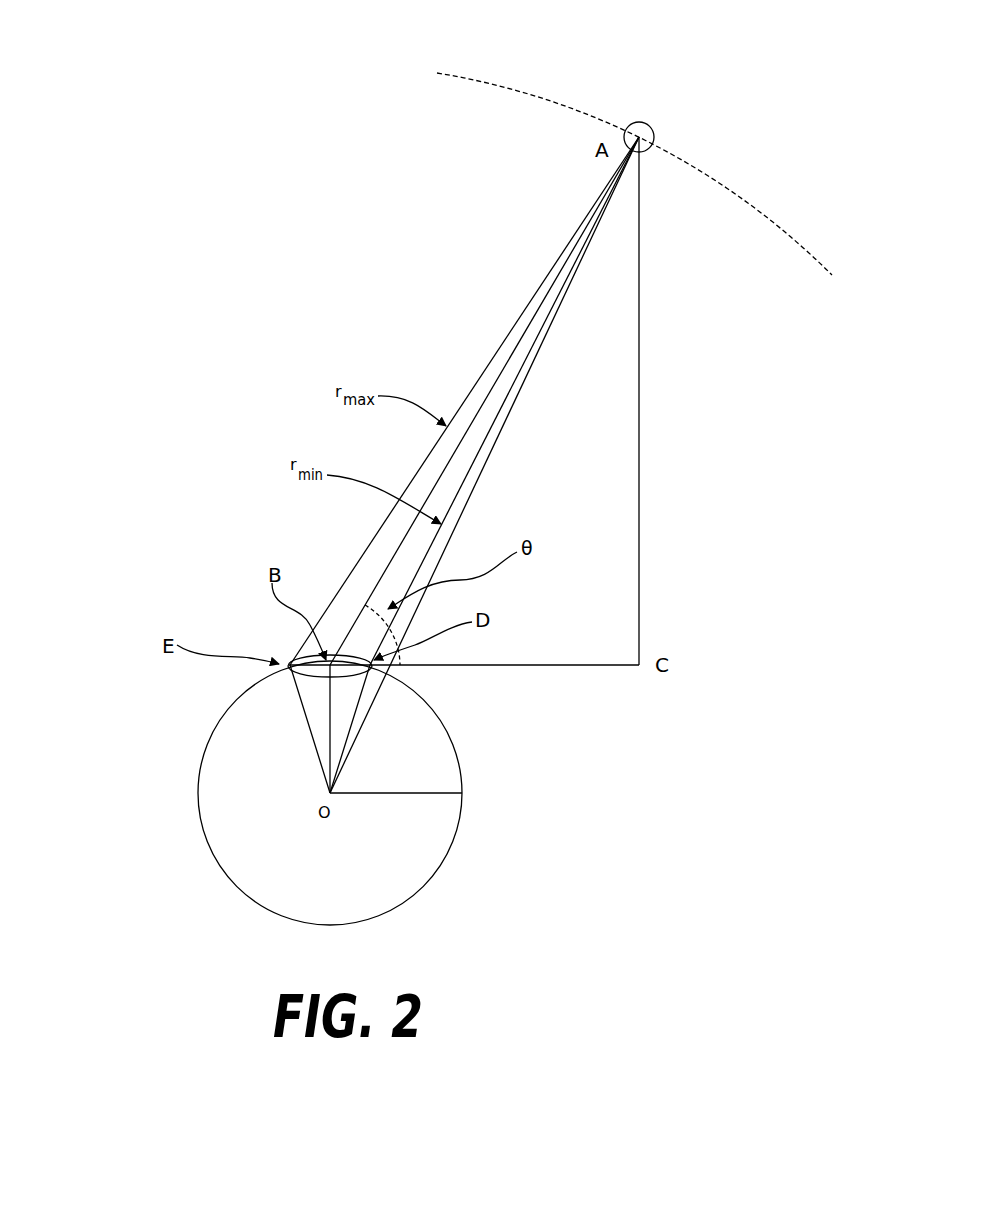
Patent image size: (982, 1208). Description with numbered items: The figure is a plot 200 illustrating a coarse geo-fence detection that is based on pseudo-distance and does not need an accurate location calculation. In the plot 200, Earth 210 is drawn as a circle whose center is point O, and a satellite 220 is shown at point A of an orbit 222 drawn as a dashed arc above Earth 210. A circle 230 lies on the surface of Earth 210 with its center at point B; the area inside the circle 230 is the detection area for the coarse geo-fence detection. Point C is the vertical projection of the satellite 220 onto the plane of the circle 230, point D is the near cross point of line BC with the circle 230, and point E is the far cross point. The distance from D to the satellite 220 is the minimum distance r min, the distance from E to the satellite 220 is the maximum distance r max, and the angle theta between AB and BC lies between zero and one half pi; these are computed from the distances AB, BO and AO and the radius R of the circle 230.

The plot 200 is at (809, 92).
The Earth 210 is at (199, 788).
The satellite 220 is at (664, 130).
The orbit 222 is at (536, 114).
The circle 230 is at (292, 656).